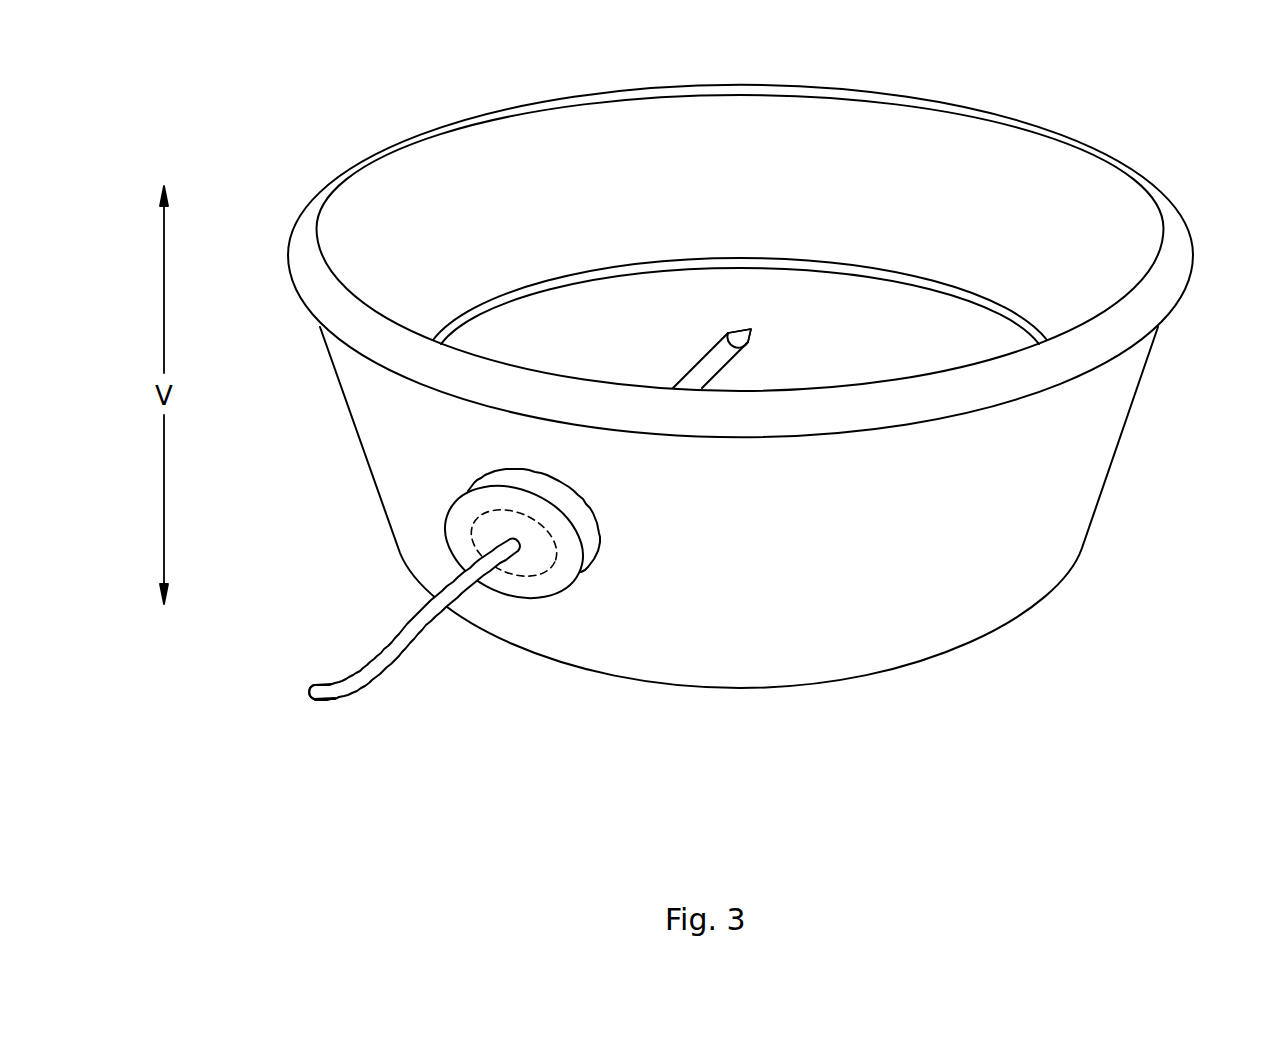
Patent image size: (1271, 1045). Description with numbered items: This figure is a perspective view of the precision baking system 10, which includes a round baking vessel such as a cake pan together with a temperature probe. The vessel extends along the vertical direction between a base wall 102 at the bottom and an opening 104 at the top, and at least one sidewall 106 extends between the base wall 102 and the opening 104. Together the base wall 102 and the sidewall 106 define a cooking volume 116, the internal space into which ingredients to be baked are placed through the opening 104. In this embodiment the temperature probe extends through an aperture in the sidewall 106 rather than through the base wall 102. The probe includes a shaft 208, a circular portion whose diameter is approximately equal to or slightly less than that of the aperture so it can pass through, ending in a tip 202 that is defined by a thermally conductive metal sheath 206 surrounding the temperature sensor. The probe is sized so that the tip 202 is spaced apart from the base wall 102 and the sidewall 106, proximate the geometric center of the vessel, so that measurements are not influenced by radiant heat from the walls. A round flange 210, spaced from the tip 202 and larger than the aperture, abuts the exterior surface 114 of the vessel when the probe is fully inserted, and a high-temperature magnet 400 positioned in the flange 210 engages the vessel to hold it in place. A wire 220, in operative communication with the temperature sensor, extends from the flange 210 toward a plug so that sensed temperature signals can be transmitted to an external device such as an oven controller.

The precision baking system 10 is at (211, 153).
The opening 104 is at (925, 140).
The cooking volume 116 is at (587, 202).
The exterior surface 114 is at (742, 509).
The sidewall 106 is at (1073, 477).
The base wall 102 is at (867, 371).
The shaft 208 is at (698, 362).
The metal sheath 206 is at (752, 337).
The tip 202 is at (752, 329).
The flange 210 is at (580, 525).
The high-temperature magnet 400 is at (543, 573).
The wire 220 is at (365, 673).